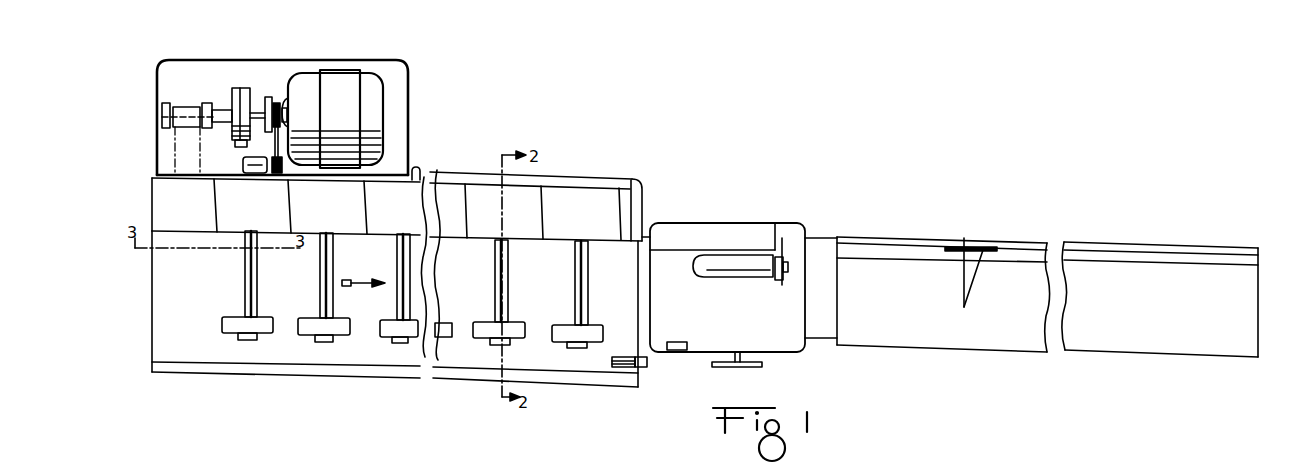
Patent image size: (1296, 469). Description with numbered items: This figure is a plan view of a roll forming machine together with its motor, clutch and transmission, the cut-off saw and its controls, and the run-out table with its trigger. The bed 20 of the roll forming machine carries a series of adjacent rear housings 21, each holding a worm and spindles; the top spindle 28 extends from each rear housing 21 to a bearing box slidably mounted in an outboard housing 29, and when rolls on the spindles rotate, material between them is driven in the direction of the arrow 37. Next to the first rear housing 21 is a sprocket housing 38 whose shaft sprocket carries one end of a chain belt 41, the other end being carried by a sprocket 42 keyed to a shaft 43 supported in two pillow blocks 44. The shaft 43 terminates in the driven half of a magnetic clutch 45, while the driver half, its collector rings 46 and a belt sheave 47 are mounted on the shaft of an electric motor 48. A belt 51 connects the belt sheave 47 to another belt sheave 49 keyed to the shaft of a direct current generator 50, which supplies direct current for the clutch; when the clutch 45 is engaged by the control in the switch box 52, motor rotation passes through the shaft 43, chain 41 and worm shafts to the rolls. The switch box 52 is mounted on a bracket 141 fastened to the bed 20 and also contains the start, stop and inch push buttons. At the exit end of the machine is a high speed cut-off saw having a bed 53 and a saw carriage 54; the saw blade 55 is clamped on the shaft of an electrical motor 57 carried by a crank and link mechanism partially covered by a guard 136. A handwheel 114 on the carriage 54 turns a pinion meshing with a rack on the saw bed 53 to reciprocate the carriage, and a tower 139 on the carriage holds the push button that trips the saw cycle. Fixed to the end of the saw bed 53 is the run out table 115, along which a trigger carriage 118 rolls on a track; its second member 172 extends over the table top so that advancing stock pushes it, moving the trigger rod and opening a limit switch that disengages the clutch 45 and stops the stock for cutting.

The bed 20 is at (178, 367).
The rear housings 21 is at (350, 225).
The top spindle 28 is at (244, 285).
The outboard housing 29 is at (224, 322).
The arrow 37 is at (364, 286).
The sprocket housing 38 is at (157, 205).
The chain belt 41 is at (176, 150).
The sprocket 42 is at (184, 106).
The shaft 43 is at (190, 107).
The pillow blocks 44 is at (157, 96).
The magnetic clutch 45 is at (242, 88).
The collector rings 46 is at (268, 97).
The belt sheave 47 is at (278, 103).
The electric motor 48 is at (345, 82).
The belt sheave 49 is at (282, 167).
The direct current generator 50 is at (243, 167).
The belt 51 is at (275, 147).
The switch box 52 is at (642, 368).
The bed 53 is at (645, 235).
The saw carriage 54 is at (798, 352).
The saw blade 55 is at (780, 287).
The electrical motor 57 is at (722, 278).
The handwheel 114 is at (742, 364).
The run out table 115 is at (983, 343).
The trigger carriage 118 is at (967, 245).
The guard 136 is at (751, 212).
The tower 139 is at (689, 322).
The bracket 141 is at (612, 362).
The second member 172 is at (963, 288).